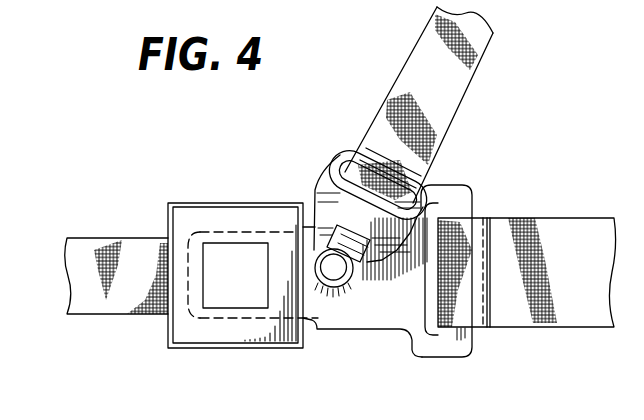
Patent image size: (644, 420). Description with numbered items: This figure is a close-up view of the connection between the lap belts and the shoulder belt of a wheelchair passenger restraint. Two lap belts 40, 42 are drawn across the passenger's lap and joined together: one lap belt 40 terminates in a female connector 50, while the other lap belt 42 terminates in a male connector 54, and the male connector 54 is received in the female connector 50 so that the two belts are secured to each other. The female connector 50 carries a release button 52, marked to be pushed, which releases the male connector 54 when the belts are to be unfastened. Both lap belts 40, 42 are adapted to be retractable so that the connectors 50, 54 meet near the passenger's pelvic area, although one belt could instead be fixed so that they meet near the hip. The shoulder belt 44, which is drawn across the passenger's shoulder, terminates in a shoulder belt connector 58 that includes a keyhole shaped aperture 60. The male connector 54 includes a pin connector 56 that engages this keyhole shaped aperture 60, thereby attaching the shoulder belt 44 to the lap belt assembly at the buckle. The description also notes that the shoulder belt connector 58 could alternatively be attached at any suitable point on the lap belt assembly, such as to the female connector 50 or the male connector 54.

The lap belt 40 is at (141, 247).
The lap belt 42 is at (570, 300).
The shoulder belt 44 is at (447, 93).
The female connector 50 is at (195, 332).
The release button 52 is at (220, 243).
The male connector 54 is at (335, 312).
The pin connector 56 is at (363, 295).
The shoulder belt connector 58 is at (440, 213).
The keyhole shaped aperture 60 is at (348, 207).